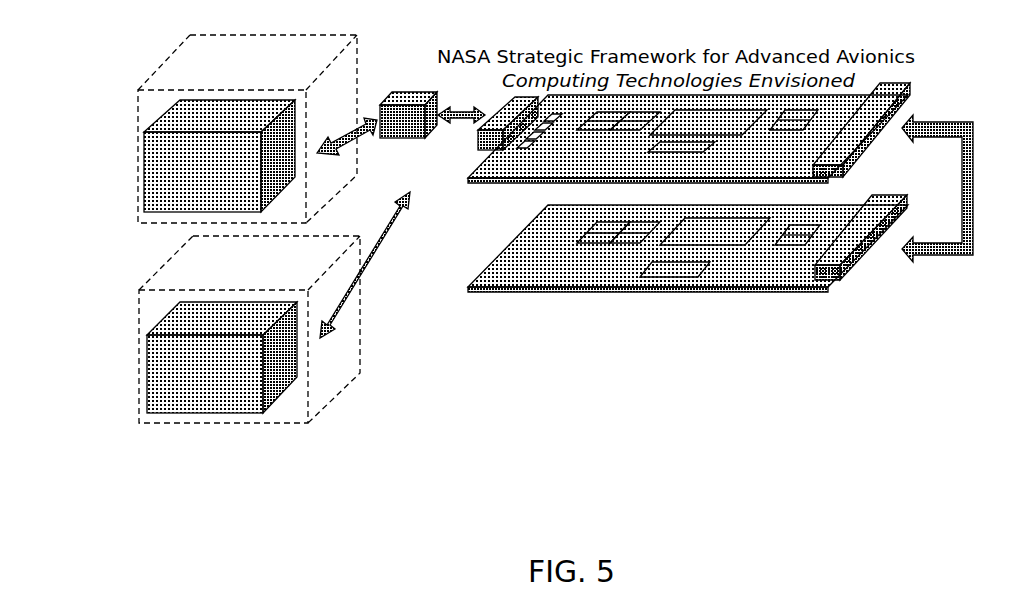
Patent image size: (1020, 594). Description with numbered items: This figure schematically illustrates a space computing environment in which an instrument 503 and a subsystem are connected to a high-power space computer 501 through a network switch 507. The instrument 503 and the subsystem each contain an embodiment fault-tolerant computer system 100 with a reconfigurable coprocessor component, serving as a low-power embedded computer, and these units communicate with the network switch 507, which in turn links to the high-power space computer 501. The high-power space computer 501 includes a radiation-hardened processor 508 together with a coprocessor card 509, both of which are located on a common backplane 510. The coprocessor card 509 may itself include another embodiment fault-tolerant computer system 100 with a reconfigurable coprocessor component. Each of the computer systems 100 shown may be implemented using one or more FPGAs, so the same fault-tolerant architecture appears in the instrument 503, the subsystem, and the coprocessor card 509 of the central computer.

The fault-tolerant computer system 100 is at (137, 167).
The high-power space computer 501 is at (495, 188).
The instrument 503 is at (267, 80).
The network switch 507 is at (406, 90).
The radiation-hardened processor 508 is at (728, 145).
The coprocessor card 509 is at (518, 300).
The backplane 510 is at (948, 212).